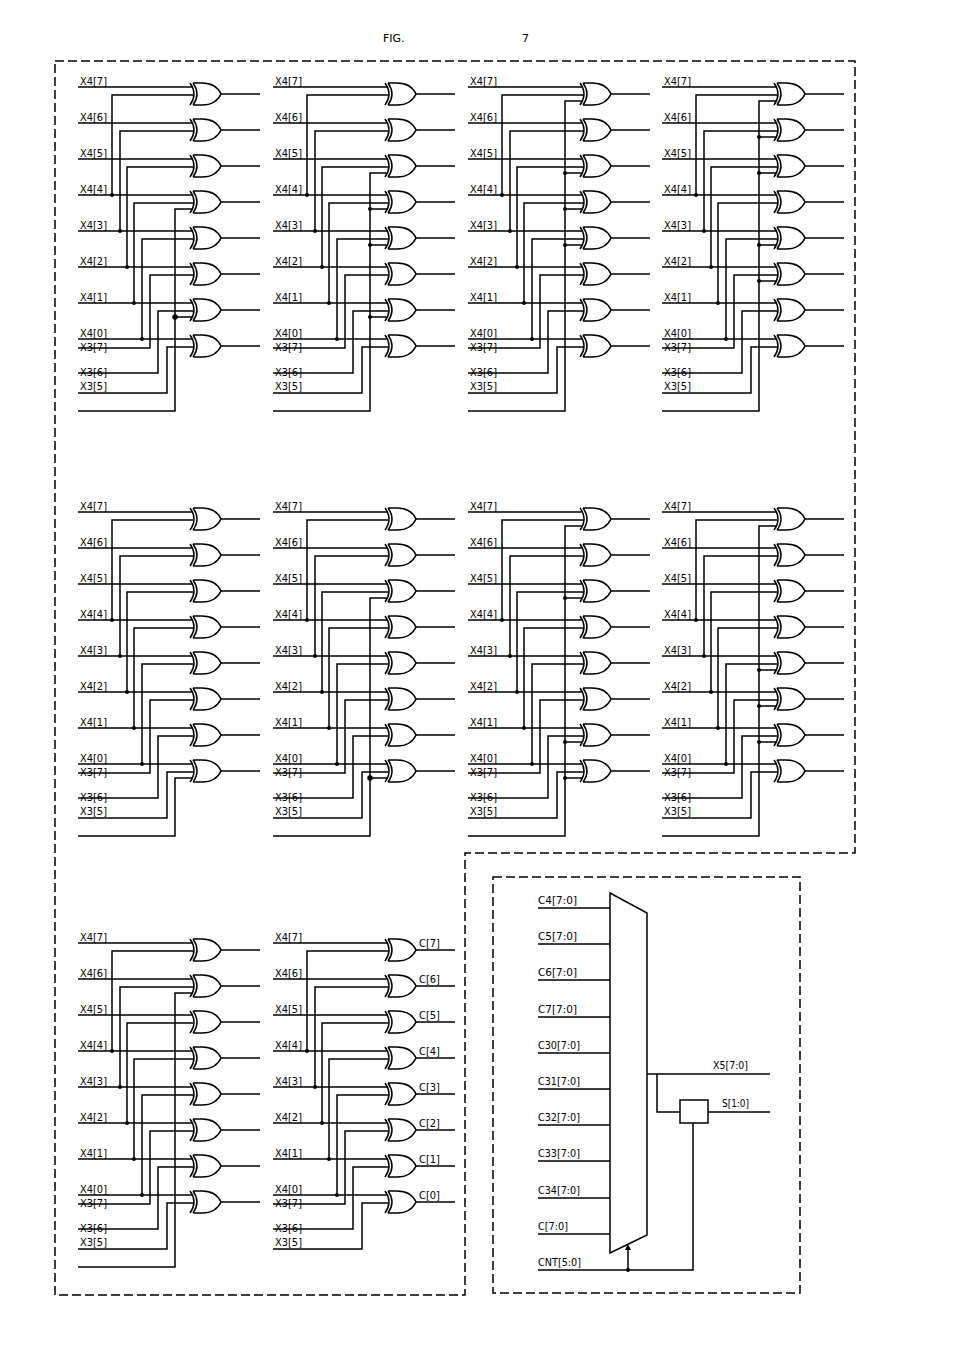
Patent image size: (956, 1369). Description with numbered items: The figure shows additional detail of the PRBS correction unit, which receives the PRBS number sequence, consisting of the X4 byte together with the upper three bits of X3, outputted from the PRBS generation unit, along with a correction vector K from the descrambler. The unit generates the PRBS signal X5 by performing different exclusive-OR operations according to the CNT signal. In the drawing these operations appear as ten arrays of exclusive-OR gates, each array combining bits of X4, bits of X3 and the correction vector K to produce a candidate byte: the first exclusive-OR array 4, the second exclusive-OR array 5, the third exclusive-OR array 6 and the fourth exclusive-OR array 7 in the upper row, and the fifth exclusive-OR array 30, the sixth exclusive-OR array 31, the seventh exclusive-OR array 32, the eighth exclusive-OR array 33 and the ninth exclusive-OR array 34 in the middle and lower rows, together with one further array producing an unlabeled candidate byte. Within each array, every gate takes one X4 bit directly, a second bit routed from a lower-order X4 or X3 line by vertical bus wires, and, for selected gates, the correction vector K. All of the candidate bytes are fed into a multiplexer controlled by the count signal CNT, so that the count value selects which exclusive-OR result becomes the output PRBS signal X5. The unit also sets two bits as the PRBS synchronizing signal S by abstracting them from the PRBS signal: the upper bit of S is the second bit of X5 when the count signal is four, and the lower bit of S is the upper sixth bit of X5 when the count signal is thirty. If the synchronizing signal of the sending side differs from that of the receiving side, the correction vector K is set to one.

The XOR array producing C4[7:0] 4 is at (169, 244).
The XOR array producing C5[7:0] 5 is at (364, 244).
The XOR array producing C6[7:0] 6 is at (559, 244).
The XOR array producing C7[7:0] 7 is at (753, 244).
The XOR array producing C30[7:0] 30 is at (169, 669).
The XOR array producing C31[7:0] 31 is at (364, 669).
The XOR array producing C32[7:0] 32 is at (559, 669).
The XOR array producing C33[7:0] 33 is at (753, 669).
The XOR array producing C34[7:0] 34 is at (169, 1100).